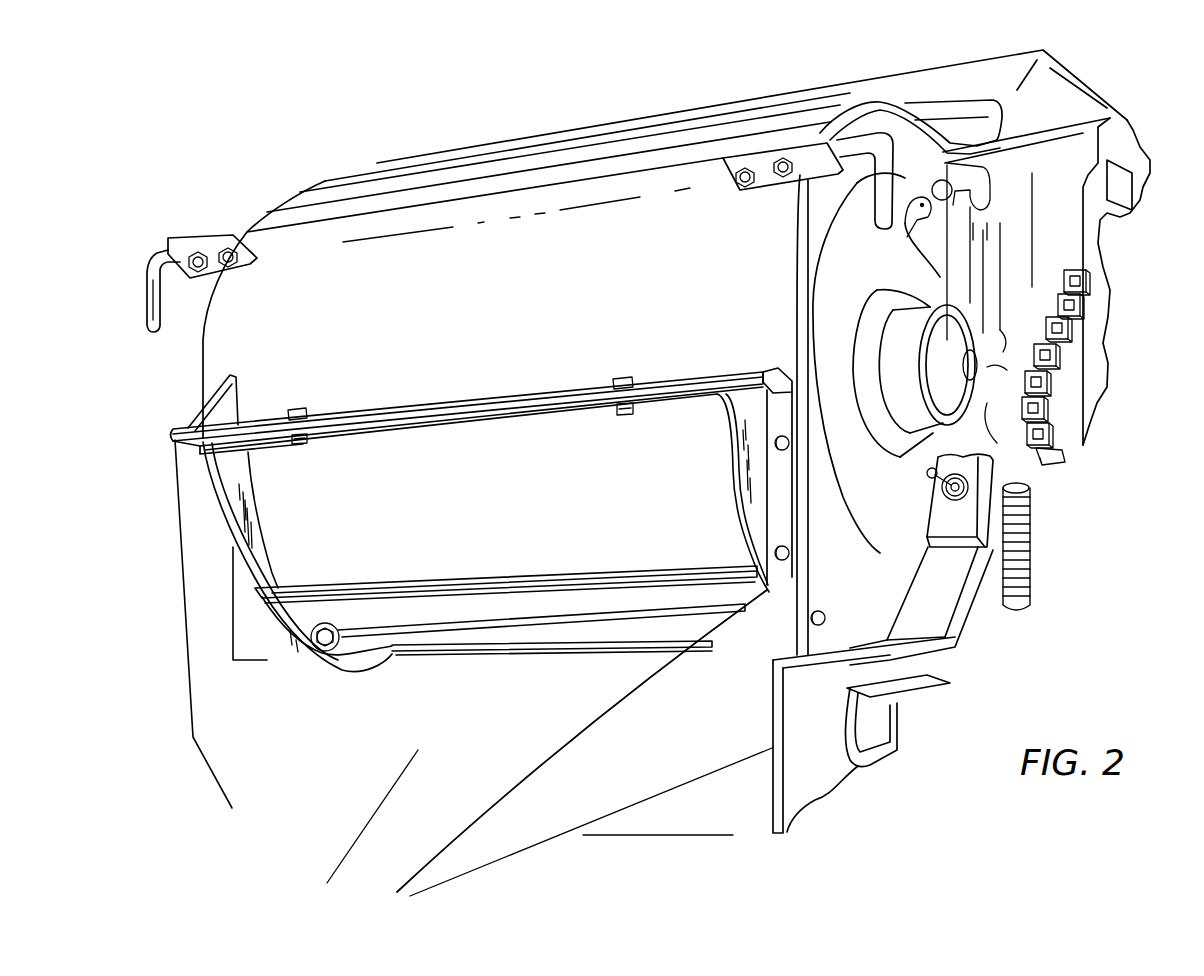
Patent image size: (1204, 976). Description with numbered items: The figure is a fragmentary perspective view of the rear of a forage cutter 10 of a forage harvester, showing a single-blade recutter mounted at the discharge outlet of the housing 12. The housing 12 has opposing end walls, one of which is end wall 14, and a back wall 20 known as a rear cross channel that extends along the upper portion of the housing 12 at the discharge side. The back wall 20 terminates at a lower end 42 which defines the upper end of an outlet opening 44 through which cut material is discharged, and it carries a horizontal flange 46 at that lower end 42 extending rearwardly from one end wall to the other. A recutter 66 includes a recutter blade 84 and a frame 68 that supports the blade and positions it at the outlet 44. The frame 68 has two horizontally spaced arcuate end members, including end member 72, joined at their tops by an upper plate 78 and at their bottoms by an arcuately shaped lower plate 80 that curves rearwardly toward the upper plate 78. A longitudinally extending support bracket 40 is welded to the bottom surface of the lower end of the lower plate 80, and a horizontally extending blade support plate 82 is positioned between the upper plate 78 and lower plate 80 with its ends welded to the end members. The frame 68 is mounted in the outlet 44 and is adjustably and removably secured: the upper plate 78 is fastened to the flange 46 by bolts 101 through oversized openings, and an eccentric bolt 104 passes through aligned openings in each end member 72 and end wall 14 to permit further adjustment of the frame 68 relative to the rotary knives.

The forage cutter 10 is at (857, 797).
The housing 12 is at (879, 553).
The first end wall 14 is at (867, 270).
The back wall 20 is at (230, 353).
The support bracket 40 is at (527, 651).
The lower end 42 is at (777, 373).
The outlet opening 44 is at (292, 540).
The horizontal flange 46 is at (452, 403).
The recutter 66 is at (232, 484).
The frame 68 is at (297, 613).
The end member 72 is at (242, 522).
The upper plate 78 is at (385, 433).
The lower plate 80 is at (540, 625).
The blade support plate 82 is at (438, 582).
The recutter blade 84 is at (458, 590).
The bolts 101 is at (304, 410).
The eccentric bolt 104 is at (333, 652).